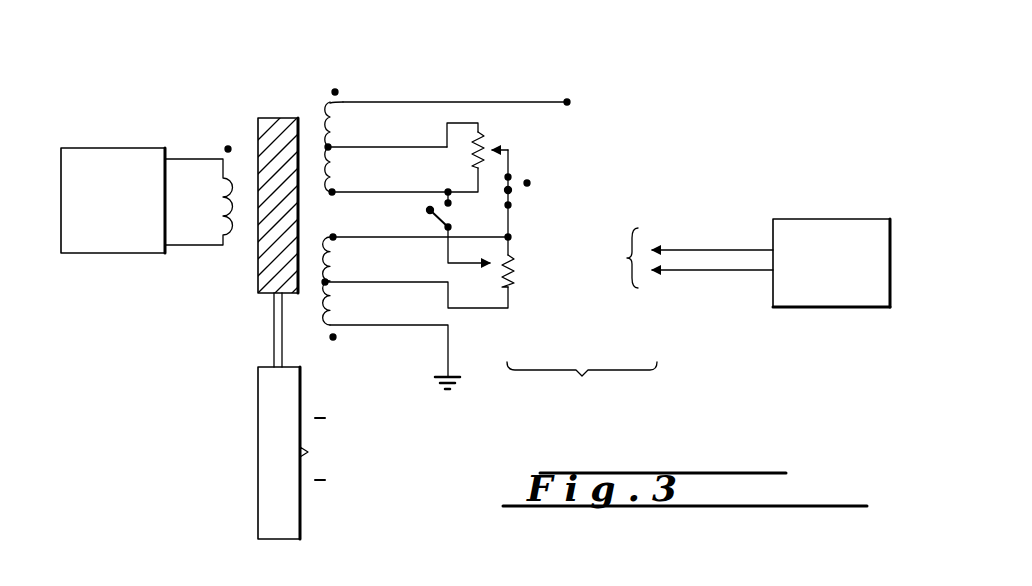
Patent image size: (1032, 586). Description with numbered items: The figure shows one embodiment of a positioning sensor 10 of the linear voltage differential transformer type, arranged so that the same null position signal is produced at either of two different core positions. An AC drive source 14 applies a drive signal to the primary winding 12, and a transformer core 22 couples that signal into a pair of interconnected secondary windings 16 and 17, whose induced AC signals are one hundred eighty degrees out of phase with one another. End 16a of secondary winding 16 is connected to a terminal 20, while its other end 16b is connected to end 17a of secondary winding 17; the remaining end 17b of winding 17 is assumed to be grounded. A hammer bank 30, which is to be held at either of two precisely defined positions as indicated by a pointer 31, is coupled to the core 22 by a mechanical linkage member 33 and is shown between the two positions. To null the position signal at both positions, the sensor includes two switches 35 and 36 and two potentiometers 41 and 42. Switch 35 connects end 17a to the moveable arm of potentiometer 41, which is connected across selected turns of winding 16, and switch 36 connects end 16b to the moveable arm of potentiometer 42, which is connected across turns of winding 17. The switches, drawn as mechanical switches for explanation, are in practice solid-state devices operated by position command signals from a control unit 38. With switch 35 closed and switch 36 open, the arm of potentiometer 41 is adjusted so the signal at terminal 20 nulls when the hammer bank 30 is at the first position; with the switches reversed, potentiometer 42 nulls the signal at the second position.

The sensor 10 is at (208, 97).
The primary winding 12 is at (232, 237).
The drive source 14 is at (100, 248).
The secondary winding 16 is at (333, 127).
The end of secondary winding 16 16a is at (342, 98).
The end of secondary winding 16 16b is at (333, 188).
The secondary winding 17 is at (333, 265).
The end of secondary winding 17 17a is at (337, 233).
The end of secondary winding 17 17b is at (342, 327).
The terminal 20 is at (568, 99).
The transformer core 22 is at (274, 123).
The hammer bank 30 is at (258, 429).
The pointer 31 is at (308, 452).
The mechanical linkage member 33 is at (273, 329).
The switch 35 is at (519, 184).
The switch 36 is at (450, 221).
The control unit 38 is at (822, 223).
The potentiometer 41 is at (486, 146).
The potentiometer 42 is at (512, 287).